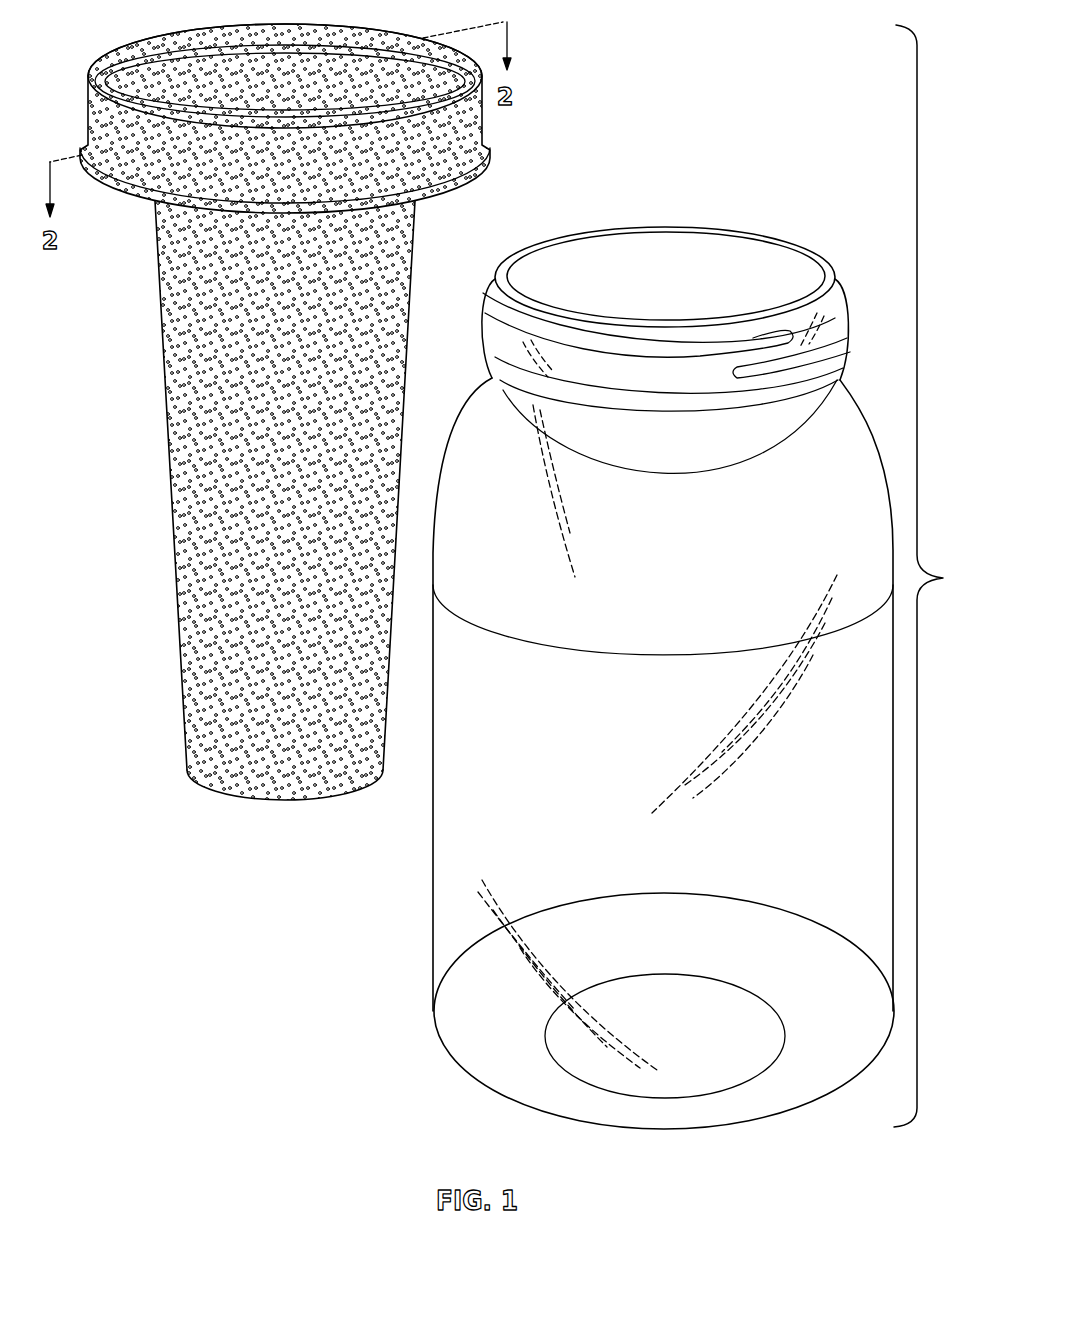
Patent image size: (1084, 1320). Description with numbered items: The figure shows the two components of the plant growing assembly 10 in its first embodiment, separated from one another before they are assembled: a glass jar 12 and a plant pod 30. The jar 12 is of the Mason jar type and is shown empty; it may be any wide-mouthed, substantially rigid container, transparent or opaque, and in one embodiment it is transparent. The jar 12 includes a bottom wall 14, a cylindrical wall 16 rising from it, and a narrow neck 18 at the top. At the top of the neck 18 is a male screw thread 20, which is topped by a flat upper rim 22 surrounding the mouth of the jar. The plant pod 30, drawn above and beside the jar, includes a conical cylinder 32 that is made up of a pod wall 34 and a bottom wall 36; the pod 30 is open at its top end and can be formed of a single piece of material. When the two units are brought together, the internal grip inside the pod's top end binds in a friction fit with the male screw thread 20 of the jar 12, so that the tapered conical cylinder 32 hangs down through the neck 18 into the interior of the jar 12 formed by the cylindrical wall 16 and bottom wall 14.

The plant growing assembly 10 is at (569, 174).
The glass jar 12 is at (690, 250).
The bottom wall 14 is at (722, 1127).
The cylindrical wall 16 is at (878, 830).
The narrow neck 18 is at (818, 393).
The male screw thread 20 is at (840, 320).
The flat upper rim 22 is at (818, 258).
The plant pod 30 is at (198, 343).
The conical cylinder 32 is at (203, 677).
The pod wall 34 is at (178, 606).
The bottom wall 36 is at (254, 798).